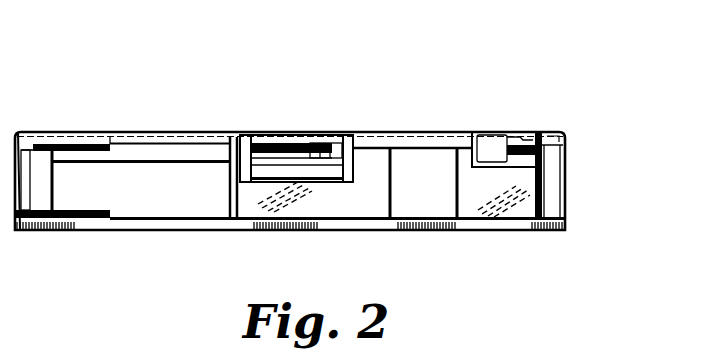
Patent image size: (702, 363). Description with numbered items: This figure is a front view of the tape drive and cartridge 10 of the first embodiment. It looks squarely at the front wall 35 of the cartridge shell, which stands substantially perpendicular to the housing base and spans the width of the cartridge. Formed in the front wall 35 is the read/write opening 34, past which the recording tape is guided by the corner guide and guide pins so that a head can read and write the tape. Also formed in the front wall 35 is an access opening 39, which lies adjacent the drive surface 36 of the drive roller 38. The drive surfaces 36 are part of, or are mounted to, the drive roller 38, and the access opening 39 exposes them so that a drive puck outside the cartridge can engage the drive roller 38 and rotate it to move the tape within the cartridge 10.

The drive and cartridge 10 is at (397, 63).
The read/write opening 34 is at (122, 133).
The front wall 35 is at (361, 197).
The drive surface 36 is at (263, 133).
The drive roller 38 is at (289, 136).
The access opening 39 is at (337, 133).